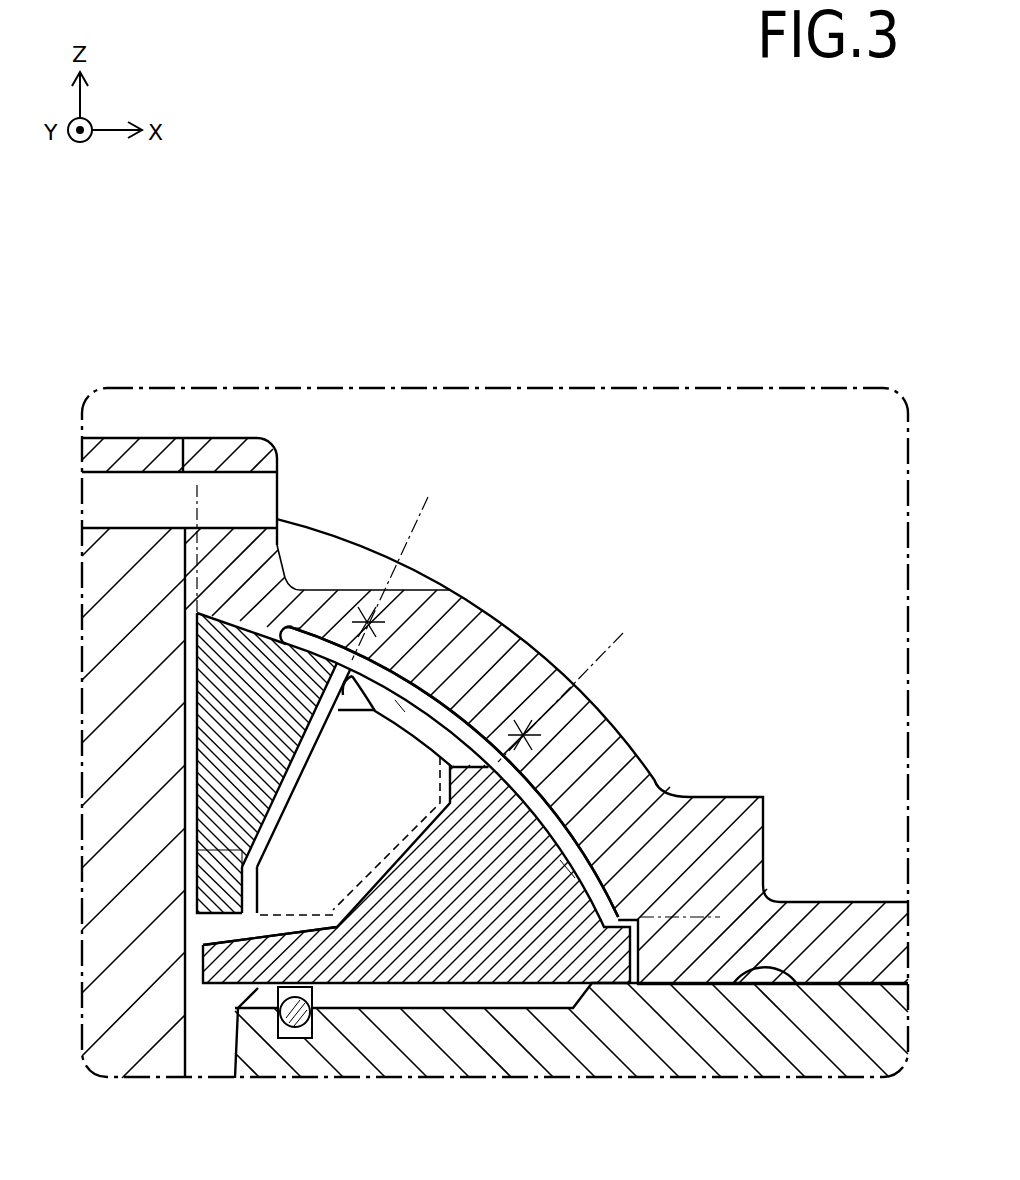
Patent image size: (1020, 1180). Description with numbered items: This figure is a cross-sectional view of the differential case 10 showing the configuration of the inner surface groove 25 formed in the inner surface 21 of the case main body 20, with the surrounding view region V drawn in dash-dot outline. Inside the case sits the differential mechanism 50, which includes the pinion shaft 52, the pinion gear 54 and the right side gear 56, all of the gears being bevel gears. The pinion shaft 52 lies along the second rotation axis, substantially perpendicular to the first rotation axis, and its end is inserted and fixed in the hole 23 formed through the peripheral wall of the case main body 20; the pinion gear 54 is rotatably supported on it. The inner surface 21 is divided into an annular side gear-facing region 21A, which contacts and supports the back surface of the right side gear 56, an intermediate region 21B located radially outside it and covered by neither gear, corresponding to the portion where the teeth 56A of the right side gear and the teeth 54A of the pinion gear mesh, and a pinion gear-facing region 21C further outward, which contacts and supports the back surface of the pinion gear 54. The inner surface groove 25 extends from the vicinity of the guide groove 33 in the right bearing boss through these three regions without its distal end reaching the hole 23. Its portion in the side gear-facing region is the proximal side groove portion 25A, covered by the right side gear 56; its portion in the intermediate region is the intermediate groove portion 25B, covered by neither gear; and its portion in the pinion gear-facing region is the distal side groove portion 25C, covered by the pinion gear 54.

The differential case 10 is at (318, 414).
The case main body 20 is at (220, 597).
The inner surface 21 is at (435, 707).
The side gear-facing region 21A is at (646, 897).
The intermediate region 21B is at (443, 707).
The pinion gear-facing region 21C is at (367, 622).
The hole 23 is at (176, 456).
The inner surface groove 25 is at (436, 805).
The proximal side groove portion 25A is at (590, 918).
The intermediate groove portion 25B is at (405, 713).
The distal side groove portion 25C is at (345, 665).
The guide groove 33 is at (768, 982).
The differential mechanism 50 is at (583, 619).
The pinion shaft 52 is at (123, 1048).
The pinion gear 54 is at (225, 667).
The teeth of pinion gear 54A is at (245, 857).
The right side gear 56 is at (515, 968).
The teeth of right side gear 56A is at (297, 925).
The viewing region V is at (640, 387).